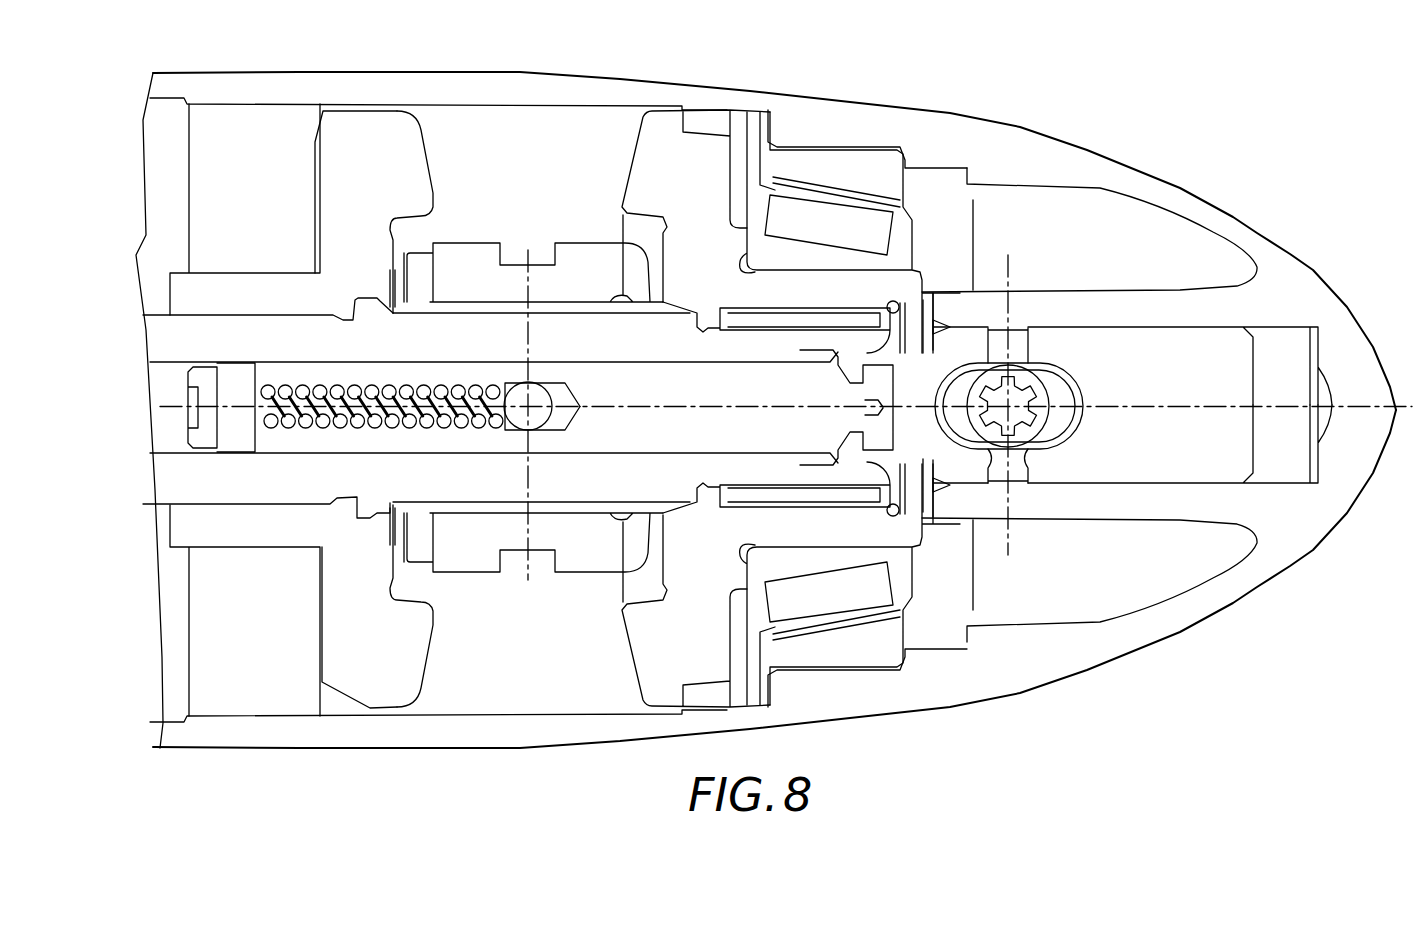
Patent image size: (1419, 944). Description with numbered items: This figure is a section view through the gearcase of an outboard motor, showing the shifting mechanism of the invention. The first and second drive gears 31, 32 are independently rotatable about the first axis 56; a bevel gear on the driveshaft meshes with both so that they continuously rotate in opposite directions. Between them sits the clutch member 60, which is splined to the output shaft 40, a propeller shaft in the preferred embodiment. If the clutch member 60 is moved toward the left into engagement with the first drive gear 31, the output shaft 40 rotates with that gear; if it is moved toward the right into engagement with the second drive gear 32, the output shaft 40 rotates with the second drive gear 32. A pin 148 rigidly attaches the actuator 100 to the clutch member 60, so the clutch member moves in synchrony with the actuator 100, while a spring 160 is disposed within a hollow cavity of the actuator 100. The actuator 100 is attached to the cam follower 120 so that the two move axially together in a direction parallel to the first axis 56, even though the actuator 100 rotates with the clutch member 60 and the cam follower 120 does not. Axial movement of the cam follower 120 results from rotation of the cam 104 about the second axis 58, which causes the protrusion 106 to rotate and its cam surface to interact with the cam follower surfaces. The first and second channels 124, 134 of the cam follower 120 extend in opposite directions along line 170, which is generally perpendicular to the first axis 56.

The first drive gear 31 is at (407, 667).
The second drive gear 32 is at (640, 652).
The output shaft 40 is at (162, 335).
The first axis 56 is at (1402, 407).
The second axis 58 is at (1010, 404).
The clutch member 60 is at (467, 260).
The actuator 100 is at (723, 393).
The cam 104 is at (1040, 418).
The protrusion 106 is at (1013, 463).
The cam follower 120 is at (1187, 377).
The first channel 124 is at (985, 473).
The second channel 134 is at (1017, 345).
The pin 148 is at (540, 418).
The spring 160 is at (348, 390).
The line 170 is at (1012, 267).